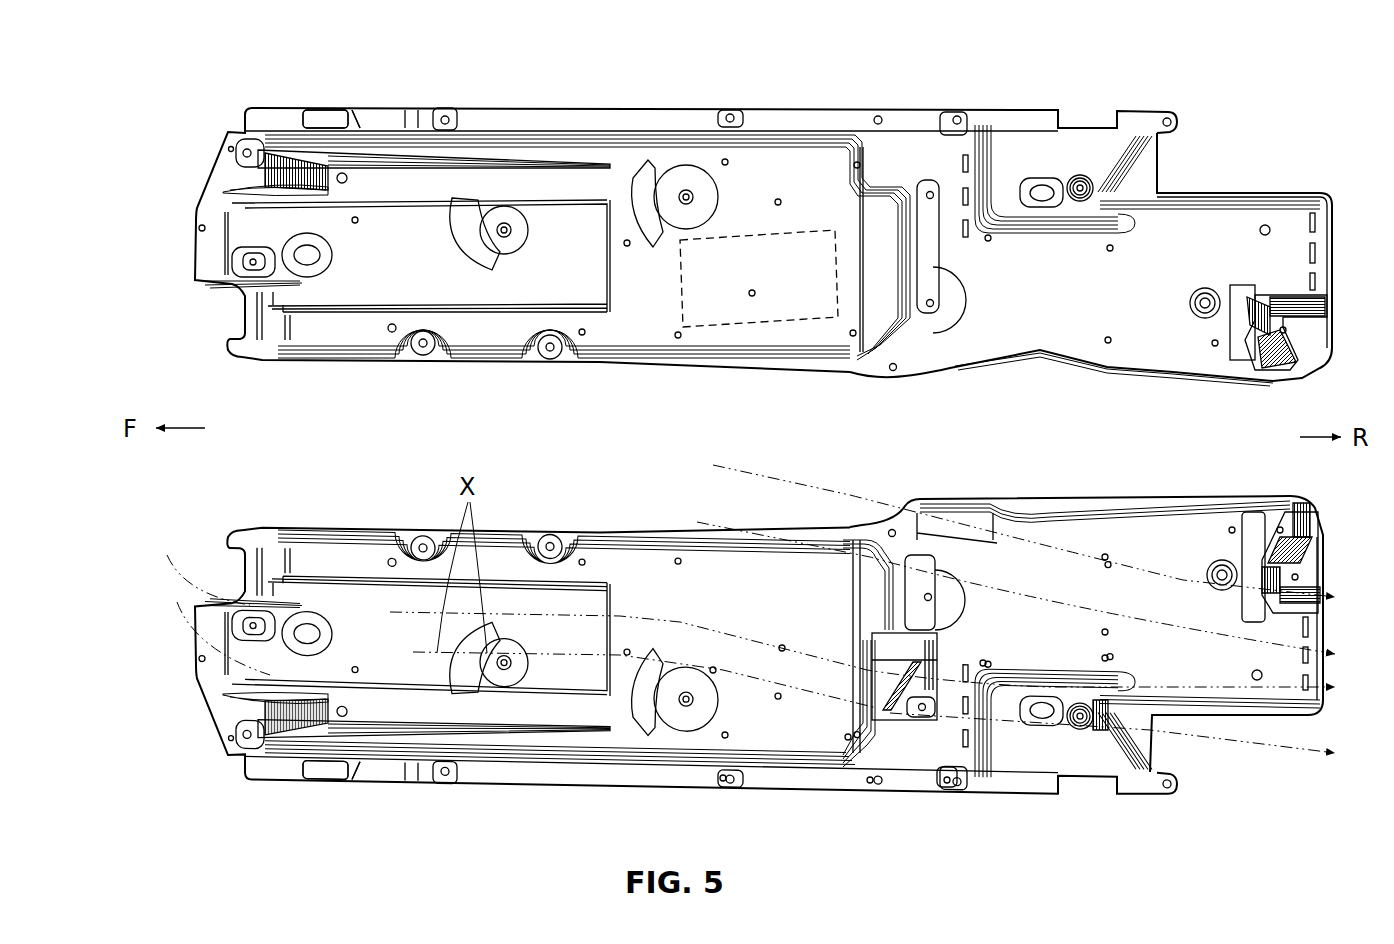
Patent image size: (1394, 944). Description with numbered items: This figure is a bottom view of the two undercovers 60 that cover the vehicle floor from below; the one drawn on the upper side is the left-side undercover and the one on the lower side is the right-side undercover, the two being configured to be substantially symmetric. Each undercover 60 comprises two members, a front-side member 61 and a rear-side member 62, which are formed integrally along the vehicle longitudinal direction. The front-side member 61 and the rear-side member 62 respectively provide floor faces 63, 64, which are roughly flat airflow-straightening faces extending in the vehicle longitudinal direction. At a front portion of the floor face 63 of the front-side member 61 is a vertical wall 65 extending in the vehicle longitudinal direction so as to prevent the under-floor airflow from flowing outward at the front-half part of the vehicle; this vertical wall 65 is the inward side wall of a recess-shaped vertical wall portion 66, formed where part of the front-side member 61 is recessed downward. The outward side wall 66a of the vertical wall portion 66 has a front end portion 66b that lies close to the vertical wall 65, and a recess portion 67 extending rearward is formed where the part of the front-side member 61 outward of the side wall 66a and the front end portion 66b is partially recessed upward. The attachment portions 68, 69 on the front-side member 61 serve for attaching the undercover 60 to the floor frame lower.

The undercover 60 is at (624, 104).
The front-side member 61 is at (622, 372).
The rear-side member 62 is at (1093, 373).
The floor face 63 is at (812, 189).
The floor face 64 is at (1081, 289).
The vertical wall 65 is at (380, 207).
The vertical wall portion 66 is at (461, 143).
The side wall 66a is at (410, 158).
The front end portion 66b is at (288, 187).
The recess portion 67 is at (372, 128).
The attachment portion 68 is at (521, 242).
The attachment portion 69 is at (708, 205).